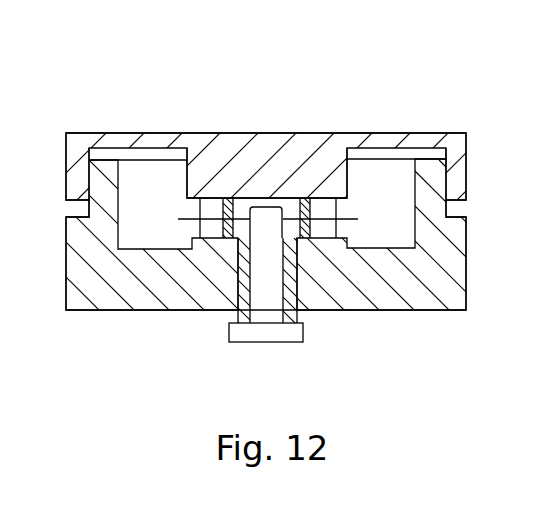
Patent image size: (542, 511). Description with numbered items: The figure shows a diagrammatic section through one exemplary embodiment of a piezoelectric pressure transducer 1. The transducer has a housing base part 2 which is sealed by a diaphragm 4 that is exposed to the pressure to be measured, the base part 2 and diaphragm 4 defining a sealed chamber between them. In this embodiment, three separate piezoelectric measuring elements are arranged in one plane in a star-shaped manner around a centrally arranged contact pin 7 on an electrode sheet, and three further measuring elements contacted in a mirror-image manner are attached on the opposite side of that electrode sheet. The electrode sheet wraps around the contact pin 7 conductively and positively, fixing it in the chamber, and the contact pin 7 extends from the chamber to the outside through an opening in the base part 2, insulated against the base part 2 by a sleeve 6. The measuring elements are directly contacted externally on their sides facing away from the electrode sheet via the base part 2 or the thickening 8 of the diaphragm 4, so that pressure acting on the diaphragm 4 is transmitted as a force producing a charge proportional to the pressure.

The piezoelectric pressure transducer 1 is at (483, 108).
The housing base part 2 is at (405, 311).
The diaphragm 4 is at (153, 140).
The sleeve 6 is at (238, 296).
The contact pin 7 is at (250, 335).
The thickening 8 is at (243, 170).